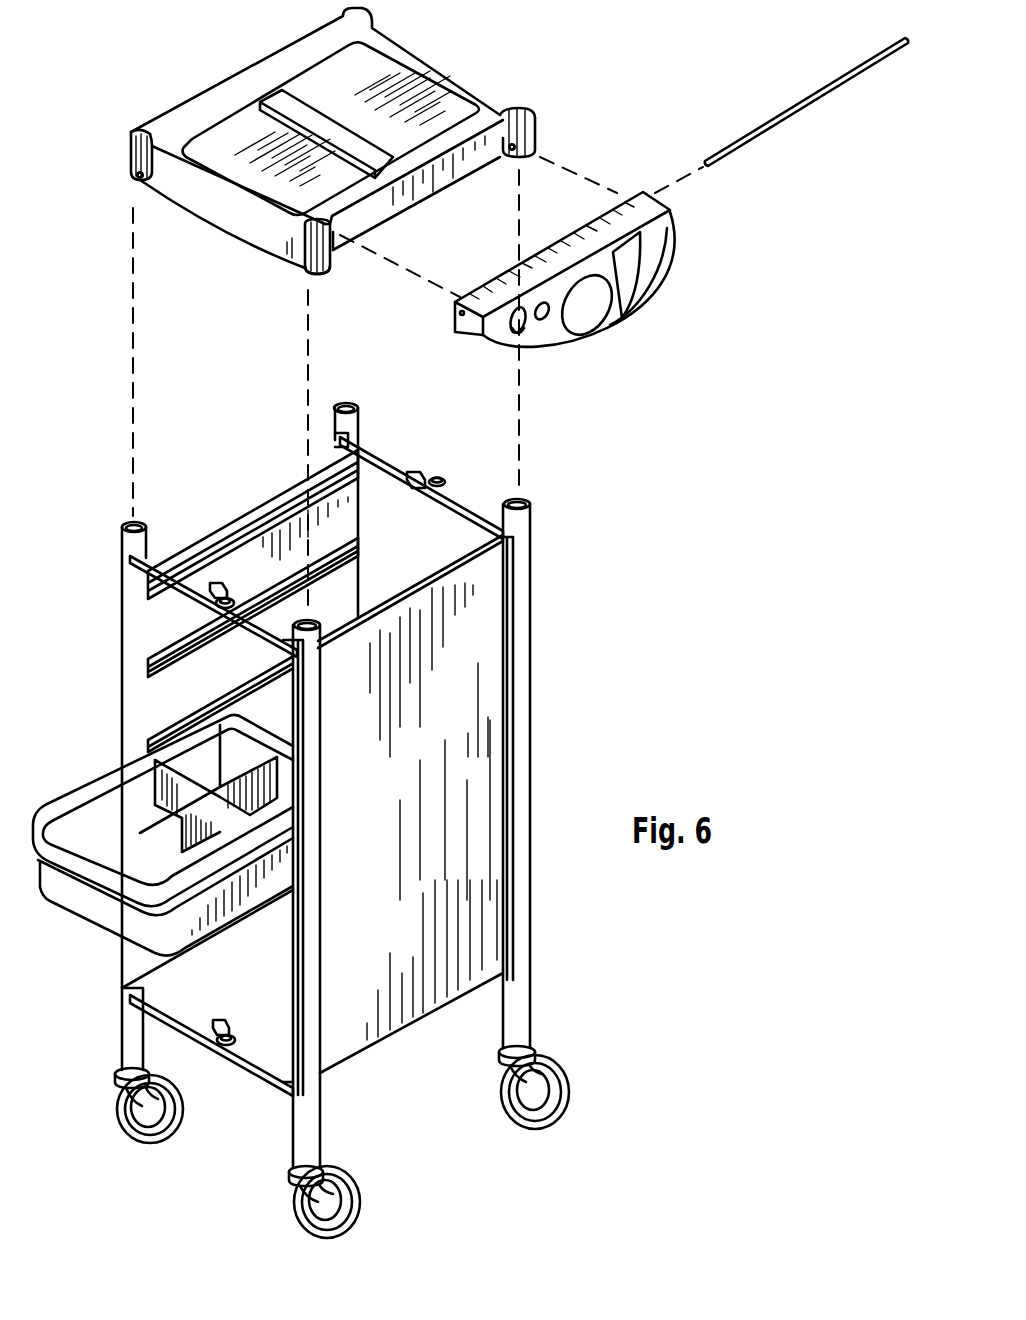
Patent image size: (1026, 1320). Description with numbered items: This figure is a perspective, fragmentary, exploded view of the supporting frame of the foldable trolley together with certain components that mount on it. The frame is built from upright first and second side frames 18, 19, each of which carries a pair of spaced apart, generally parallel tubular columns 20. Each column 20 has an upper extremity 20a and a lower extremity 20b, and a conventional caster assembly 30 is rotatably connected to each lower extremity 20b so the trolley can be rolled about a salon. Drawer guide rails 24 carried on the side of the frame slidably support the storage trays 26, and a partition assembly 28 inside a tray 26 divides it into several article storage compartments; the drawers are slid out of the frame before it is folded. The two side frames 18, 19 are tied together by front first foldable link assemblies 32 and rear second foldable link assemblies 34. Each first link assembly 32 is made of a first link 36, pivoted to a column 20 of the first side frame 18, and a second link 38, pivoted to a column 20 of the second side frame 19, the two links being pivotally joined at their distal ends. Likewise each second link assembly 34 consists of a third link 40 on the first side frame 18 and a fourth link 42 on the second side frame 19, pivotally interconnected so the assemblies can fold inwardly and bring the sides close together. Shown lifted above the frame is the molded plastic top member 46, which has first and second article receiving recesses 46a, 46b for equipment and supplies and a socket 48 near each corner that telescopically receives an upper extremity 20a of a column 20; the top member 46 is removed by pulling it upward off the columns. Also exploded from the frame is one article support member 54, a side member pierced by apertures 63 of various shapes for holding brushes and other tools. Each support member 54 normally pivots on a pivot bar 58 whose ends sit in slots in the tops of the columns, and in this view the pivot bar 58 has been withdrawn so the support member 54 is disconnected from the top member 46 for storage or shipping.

The first side frame 18 is at (147, 705).
The second side frame 19 is at (487, 627).
The tubular columns 20 is at (520, 700).
The upper extremity 20a is at (357, 420).
The lower extremity 20b is at (127, 1058).
The drawer guide rails 24 is at (143, 585).
The storage trays 26 is at (53, 803).
The partition assemblies 28 is at (177, 793).
The caster assembly 30 is at (122, 1112).
The first foldable link assemblies 32 is at (192, 583).
The second foldable link assemblies 34 is at (400, 455).
The first link 36 is at (190, 592).
The second link 38 is at (273, 620).
The third link 40 is at (377, 435).
The fourth link 42 is at (457, 493).
The top member 46 is at (250, 80).
The first article receiving recess 46a is at (225, 138).
The second article receiving recess 46b is at (345, 75).
The sockets 48 is at (137, 180).
The article support members 54 is at (583, 350).
The pivot bar 58 is at (790, 112).
The apertures 63 is at (622, 287).